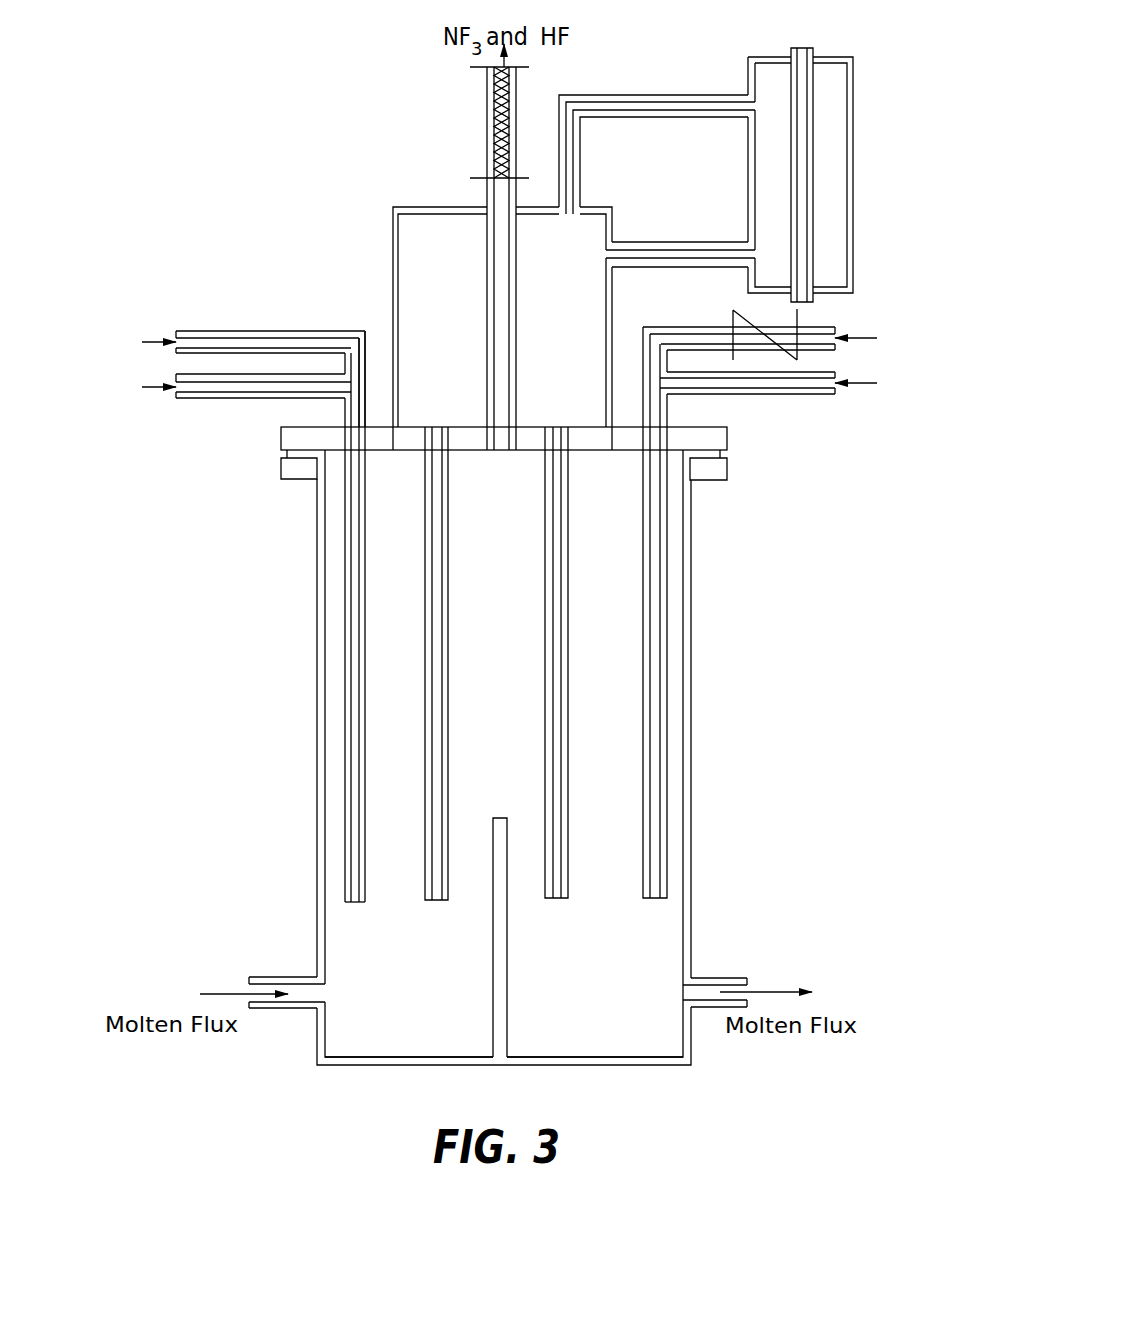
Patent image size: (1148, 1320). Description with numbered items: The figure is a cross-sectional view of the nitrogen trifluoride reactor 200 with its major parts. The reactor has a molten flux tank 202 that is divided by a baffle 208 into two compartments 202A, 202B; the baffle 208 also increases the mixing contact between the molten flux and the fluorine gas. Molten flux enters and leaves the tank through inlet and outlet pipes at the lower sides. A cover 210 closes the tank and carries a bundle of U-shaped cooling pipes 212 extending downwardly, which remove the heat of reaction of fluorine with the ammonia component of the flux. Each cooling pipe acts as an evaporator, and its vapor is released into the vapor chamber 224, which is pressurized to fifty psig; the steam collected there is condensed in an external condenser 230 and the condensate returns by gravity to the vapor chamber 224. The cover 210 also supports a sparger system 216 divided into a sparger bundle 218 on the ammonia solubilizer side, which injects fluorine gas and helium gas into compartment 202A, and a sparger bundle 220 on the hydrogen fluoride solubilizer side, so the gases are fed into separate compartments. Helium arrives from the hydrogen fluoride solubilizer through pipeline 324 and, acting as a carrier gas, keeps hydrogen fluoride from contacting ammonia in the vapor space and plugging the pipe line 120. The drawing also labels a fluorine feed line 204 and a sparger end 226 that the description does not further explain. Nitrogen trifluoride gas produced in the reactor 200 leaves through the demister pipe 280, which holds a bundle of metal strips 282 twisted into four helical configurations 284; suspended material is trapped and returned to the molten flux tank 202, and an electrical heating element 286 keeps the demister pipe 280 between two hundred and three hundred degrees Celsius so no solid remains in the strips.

The pipe line 120 is at (268, 328).
The nitrogen trifluoride reactor 200 is at (306, 733).
The molten flux tank 202 is at (690, 873).
The compartment 202A is at (473, 1027).
The compartment 202B is at (643, 1023).
The fluorine feed tube 204 is at (273, 398).
The baffle 208 is at (503, 813).
The cover 210 is at (727, 442).
The U-shaped cooling pipes 212 is at (448, 620).
The sparger system 216 is at (327, 323).
The sparger bundle 218 is at (363, 605).
The sparger bundle 220 is at (645, 572).
The vapor chamber 224 is at (441, 305).
The tube outlet end 226 is at (355, 903).
The external condenser 230 is at (855, 157).
The demister pipe 280 is at (488, 146).
The bundle of metal strips 282 is at (490, 112).
The helical configurations 284 is at (507, 137).
The electrical heating element 286 is at (475, 67).
The pipeline 324 is at (717, 332).